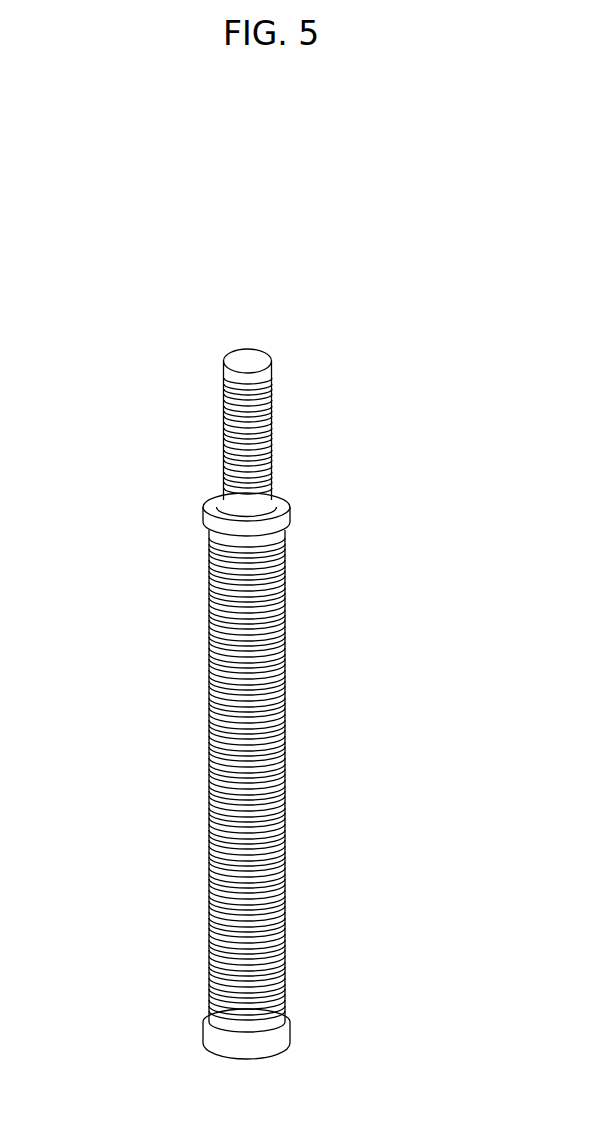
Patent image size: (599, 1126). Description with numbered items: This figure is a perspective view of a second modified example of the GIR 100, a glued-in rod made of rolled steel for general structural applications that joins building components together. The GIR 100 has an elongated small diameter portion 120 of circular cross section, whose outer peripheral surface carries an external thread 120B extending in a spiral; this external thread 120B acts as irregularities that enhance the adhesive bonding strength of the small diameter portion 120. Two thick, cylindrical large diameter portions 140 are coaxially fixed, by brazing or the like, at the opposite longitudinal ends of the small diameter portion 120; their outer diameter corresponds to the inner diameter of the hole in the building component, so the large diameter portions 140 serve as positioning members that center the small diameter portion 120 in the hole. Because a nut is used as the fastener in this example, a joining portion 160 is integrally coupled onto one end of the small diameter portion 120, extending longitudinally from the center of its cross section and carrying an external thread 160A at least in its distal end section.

The GIR 100 is at (302, 700).
The small diameter portion 120 is at (285, 885).
The external thread 120B is at (212, 740).
The large diameter portion 140 is at (292, 513).
The joining portion 160 is at (243, 355).
The external thread 160A is at (232, 443).